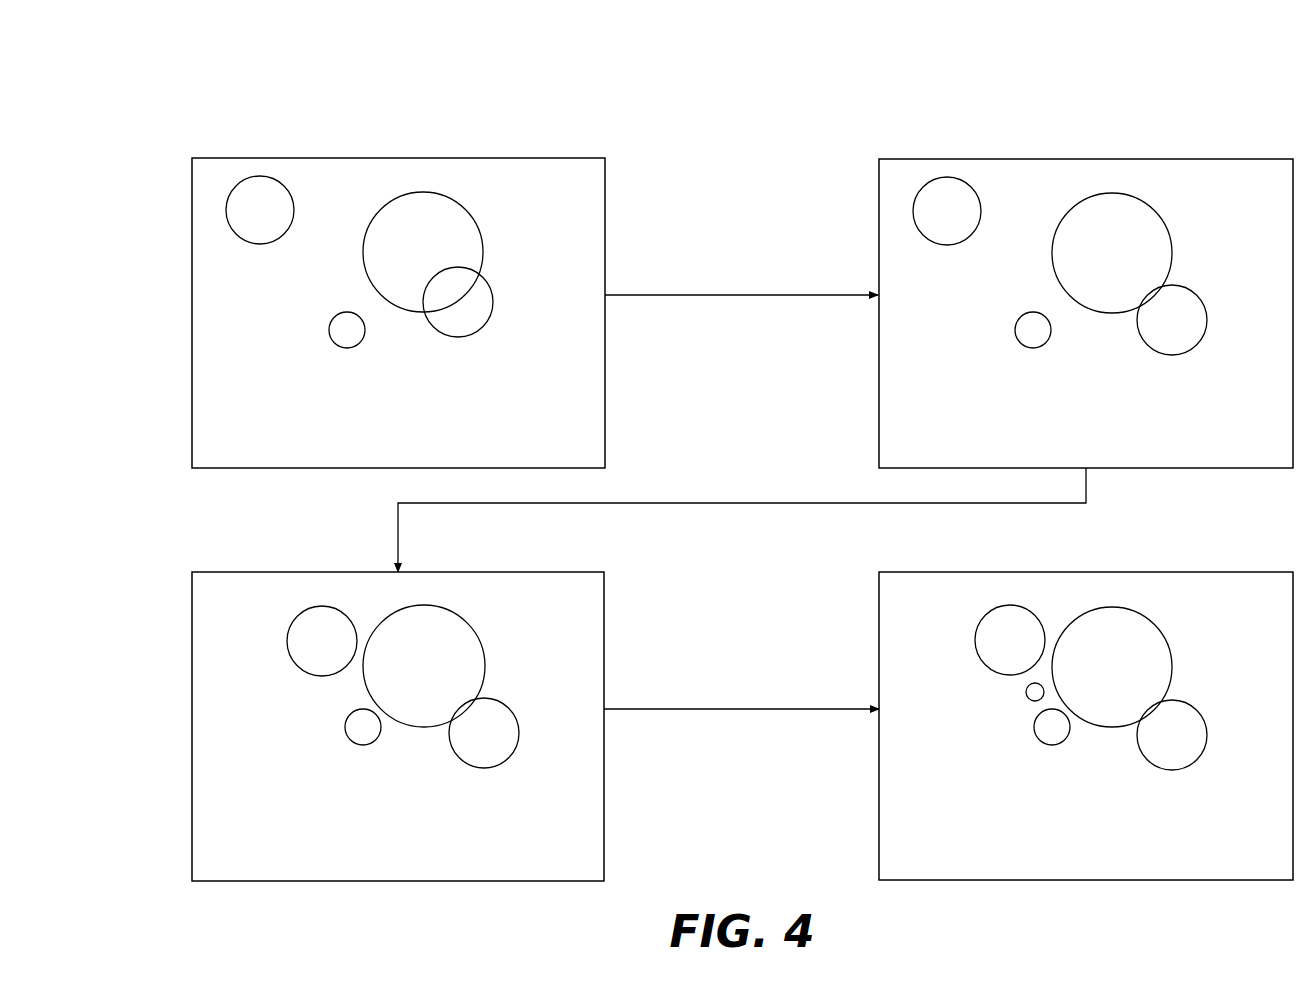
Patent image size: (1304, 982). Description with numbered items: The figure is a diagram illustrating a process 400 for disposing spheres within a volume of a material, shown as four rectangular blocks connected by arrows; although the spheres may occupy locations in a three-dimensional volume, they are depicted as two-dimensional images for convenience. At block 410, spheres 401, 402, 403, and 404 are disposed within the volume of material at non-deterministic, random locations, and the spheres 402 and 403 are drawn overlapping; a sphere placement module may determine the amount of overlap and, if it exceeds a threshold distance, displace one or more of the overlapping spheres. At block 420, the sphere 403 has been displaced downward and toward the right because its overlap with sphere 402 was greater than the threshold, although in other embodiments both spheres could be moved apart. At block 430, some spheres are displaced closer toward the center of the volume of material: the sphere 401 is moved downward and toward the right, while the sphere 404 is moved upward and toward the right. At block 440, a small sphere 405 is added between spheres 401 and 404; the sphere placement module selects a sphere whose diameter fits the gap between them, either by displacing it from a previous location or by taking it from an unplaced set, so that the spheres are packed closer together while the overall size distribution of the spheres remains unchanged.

The process 400 is at (260, 103).
The sphere 401 is at (635, 426).
The sphere 402 is at (767, 459).
The sphere 403 is at (815, 518).
The sphere 404 is at (699, 528).
The sphere 405 is at (1025, 692).
The block 410 is at (605, 414).
The block 420 is at (878, 414).
The block 430 is at (604, 811).
The block 440 is at (879, 811).